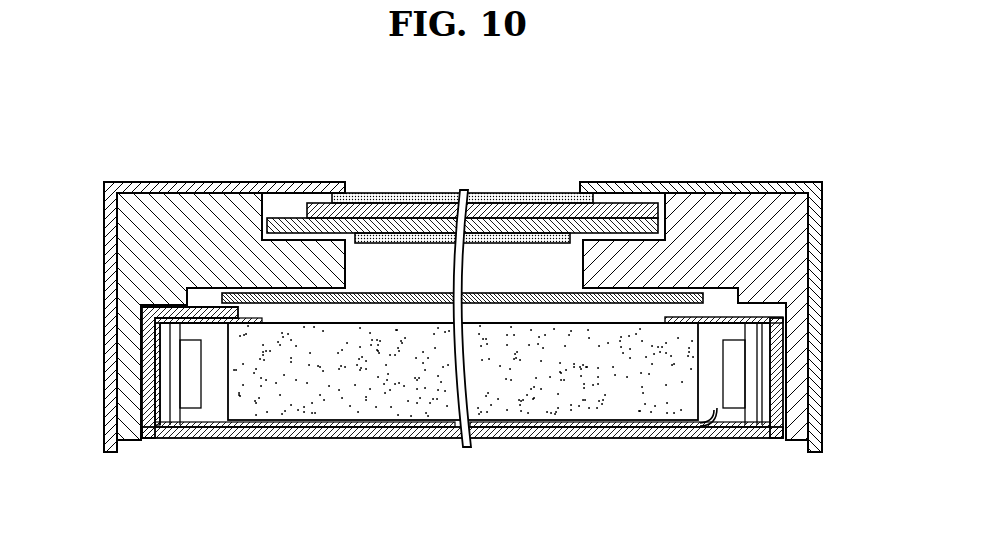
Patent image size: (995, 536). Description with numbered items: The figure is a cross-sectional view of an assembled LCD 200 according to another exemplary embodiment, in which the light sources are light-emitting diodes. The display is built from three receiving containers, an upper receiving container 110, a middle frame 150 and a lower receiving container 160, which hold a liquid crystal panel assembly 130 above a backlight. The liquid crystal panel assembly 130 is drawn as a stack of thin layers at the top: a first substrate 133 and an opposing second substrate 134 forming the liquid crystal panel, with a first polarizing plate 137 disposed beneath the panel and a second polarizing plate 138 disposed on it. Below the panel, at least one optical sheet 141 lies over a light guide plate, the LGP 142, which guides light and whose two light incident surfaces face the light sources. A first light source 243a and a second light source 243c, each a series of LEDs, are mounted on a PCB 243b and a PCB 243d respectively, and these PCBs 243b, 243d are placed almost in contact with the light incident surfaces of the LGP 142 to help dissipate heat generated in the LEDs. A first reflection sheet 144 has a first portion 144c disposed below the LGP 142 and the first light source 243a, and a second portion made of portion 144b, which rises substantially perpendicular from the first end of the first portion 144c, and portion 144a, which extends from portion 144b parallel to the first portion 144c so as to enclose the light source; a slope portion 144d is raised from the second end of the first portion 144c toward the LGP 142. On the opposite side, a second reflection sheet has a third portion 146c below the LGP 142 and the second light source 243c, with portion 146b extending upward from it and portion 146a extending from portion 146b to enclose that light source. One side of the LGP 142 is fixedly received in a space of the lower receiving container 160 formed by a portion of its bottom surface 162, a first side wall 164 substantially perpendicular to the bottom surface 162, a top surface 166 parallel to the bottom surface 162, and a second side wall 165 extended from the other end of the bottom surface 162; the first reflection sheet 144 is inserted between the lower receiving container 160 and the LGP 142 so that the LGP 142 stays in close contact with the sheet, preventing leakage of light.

The LCD 200 is at (684, 92).
The upper receiving container 110 is at (212, 182).
The middle frame 150 is at (140, 248).
The liquid crystal panel assembly 130 is at (440, 113).
The first substrate 133 is at (275, 215).
The second substrate 134 is at (320, 213).
The first polarizing plate 137 is at (385, 195).
The second polarizing plate 138 is at (437, 193).
The optical sheet 141 is at (705, 296).
The LGP 142 is at (517, 333).
The first reflection sheet 144 is at (397, 412).
The portion of second portion 144a is at (262, 425).
The portion of second portion 144b is at (155, 386).
The first portion 144c is at (320, 428).
The slope portion 144d is at (713, 426).
The portion of fourth portion 146a is at (745, 317).
The portion of fourth portion 146b is at (773, 360).
The third portion 146c is at (632, 440).
The lower receiving container 160 is at (222, 438).
The bottom surface 162 is at (545, 434).
The first side wall 164 is at (155, 365).
The second side wall 165 is at (773, 403).
The top surface 166 is at (186, 292).
The first light source 243a is at (193, 395).
The PCB 243b is at (173, 413).
The second light source 243c is at (732, 410).
The PCB 243d is at (750, 413).